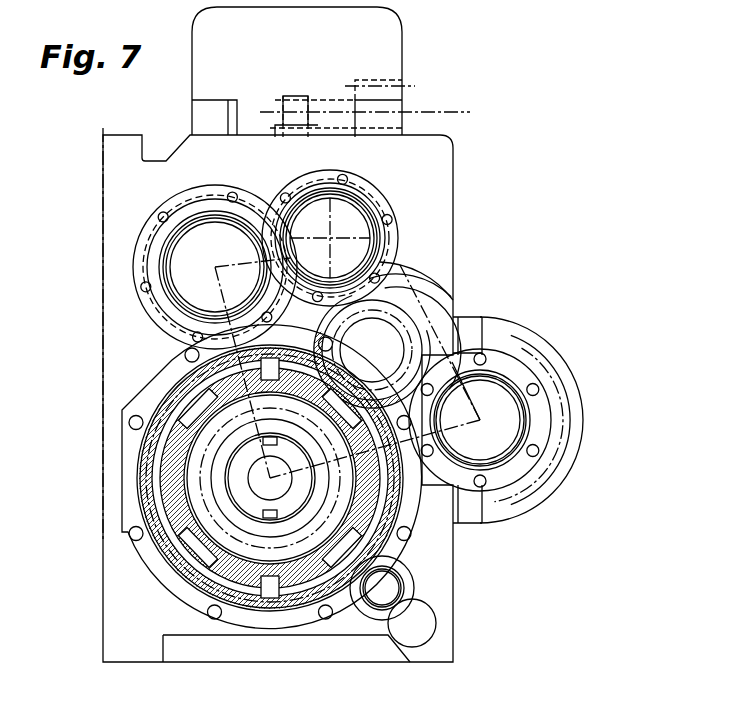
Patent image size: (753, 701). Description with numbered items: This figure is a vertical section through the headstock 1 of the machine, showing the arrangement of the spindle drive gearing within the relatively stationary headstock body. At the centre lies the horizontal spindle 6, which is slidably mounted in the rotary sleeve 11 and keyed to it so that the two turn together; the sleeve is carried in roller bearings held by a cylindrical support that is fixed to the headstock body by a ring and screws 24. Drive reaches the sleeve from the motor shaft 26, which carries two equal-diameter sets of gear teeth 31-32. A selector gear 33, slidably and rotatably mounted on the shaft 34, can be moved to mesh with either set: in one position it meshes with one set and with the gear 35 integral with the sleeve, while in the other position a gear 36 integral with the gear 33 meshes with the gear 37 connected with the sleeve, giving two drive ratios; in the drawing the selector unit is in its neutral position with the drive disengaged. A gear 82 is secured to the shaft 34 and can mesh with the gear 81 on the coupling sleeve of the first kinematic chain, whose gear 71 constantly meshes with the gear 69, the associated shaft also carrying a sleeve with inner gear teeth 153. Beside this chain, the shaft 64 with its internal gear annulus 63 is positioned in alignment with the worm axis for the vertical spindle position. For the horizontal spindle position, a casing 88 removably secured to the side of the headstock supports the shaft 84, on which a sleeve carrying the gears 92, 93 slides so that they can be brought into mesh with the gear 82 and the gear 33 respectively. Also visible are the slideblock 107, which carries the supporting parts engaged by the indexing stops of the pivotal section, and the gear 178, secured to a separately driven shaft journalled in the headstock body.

The headstock 1 is at (442, 553).
The slideblock 107 is at (388, 45).
The shaft 64 is at (190, 265).
The gear 69 is at (163, 233).
The internal gear annulus 63 is at (177, 293).
The gear 81 is at (377, 190).
The gear 71 is at (325, 183).
The inner gear teeth 153 is at (303, 202).
The sets of gear teeth 31-32 is at (347, 202).
The shaft 26 is at (342, 240).
The screws 24 is at (350, 338).
The gear 82 is at (395, 298).
The gear 33 is at (424, 290).
The gear 36 is at (452, 293).
The shaft 34 is at (470, 308).
The casing 88 is at (558, 480).
The gear 92 is at (557, 390).
The gear 93 is at (508, 380).
The shaft 84 is at (513, 420).
The gear 37 is at (150, 557).
The gear 35 is at (177, 577).
The rotary sleeve 11 is at (230, 455).
The horizontal spindle 6 is at (240, 474).
The gear 178 is at (405, 582).